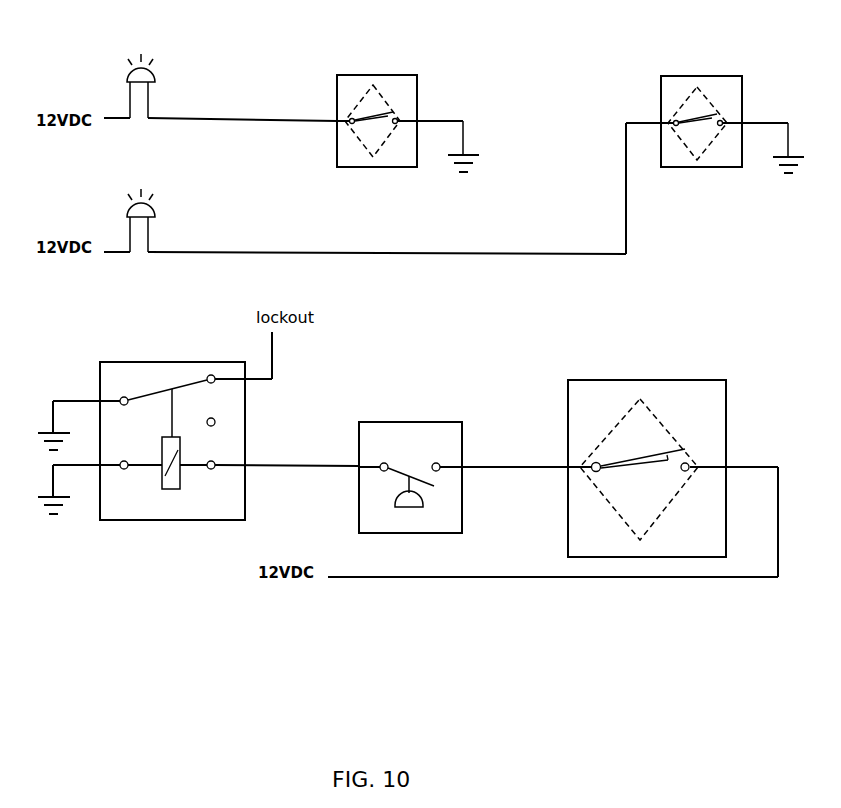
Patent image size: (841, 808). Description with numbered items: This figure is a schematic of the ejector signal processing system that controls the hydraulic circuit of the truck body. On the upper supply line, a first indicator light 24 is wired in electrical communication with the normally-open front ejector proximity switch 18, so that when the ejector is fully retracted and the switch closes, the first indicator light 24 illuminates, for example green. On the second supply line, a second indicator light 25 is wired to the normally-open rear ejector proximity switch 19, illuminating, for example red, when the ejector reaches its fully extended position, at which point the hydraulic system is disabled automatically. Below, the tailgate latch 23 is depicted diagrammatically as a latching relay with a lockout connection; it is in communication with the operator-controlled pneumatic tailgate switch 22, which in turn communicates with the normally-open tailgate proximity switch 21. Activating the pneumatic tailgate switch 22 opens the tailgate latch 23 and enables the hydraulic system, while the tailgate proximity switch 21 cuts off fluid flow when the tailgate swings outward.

The front ejector proximity switch 18 is at (417, 83).
The rear ejector proximity switch 19 is at (680, 76).
The tailgate proximity switch 21 is at (604, 380).
The pneumatic tailgate switch 22 is at (398, 421).
The tailgate latch 23 is at (174, 362).
The first indicator light 24 is at (148, 75).
The second indicator light 25 is at (148, 208).